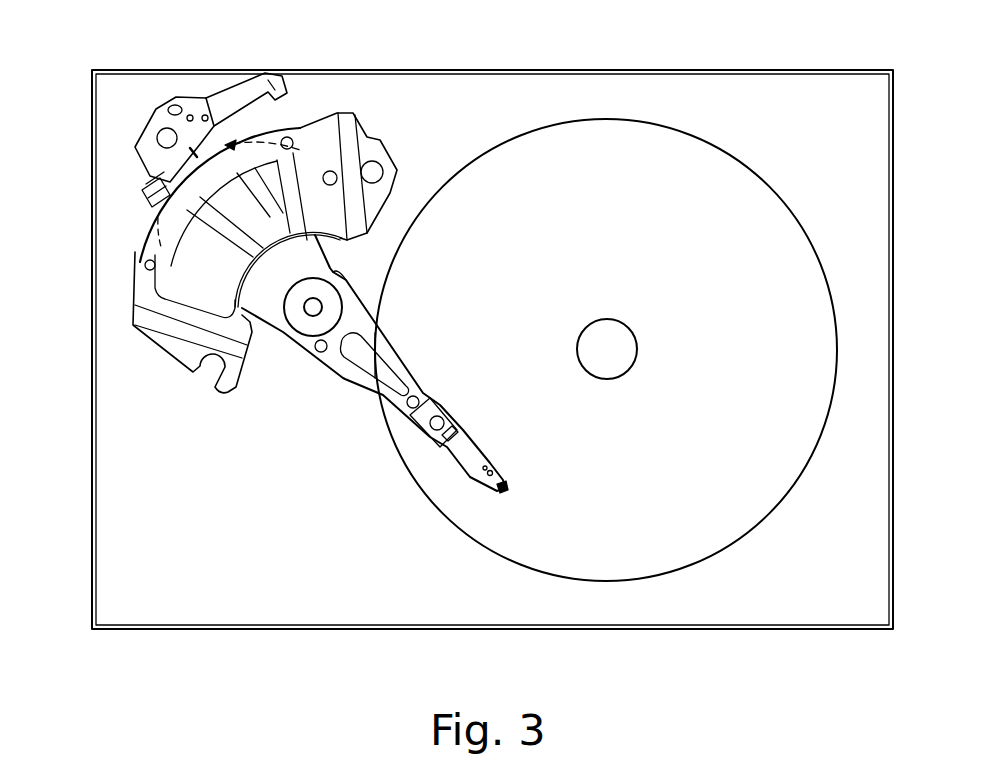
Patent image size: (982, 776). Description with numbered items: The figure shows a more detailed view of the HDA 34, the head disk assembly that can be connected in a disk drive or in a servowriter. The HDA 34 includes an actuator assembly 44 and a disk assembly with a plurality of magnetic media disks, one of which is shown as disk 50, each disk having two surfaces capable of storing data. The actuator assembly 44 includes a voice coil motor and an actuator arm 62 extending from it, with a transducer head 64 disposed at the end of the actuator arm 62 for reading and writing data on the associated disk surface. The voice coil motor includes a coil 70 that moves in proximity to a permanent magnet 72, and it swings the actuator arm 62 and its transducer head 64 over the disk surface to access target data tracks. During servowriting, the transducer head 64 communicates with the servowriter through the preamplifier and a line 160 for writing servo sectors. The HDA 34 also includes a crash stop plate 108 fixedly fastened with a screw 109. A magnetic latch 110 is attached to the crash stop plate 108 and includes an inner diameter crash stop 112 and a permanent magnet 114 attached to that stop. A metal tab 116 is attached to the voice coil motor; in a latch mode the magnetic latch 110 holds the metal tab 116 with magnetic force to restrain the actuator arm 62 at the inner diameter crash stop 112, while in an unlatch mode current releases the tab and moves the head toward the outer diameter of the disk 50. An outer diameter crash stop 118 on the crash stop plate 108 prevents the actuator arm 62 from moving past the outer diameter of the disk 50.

The HDA 34 is at (538, 68).
The magnetic media disk 50 is at (695, 566).
The actuator assembly 44 is at (293, 350).
The actuator arm 62 is at (362, 288).
The transducer head 64 is at (506, 485).
The coil 70 is at (185, 270).
The permanent magnet 72 is at (312, 127).
The line 160 is at (138, 241).
The crash stop plate 108 is at (158, 108).
The screw 109 is at (163, 137).
The magnetic latch 110 is at (140, 187).
The inner diameter crash stop 112 is at (150, 203).
The permanent magnet 114 is at (133, 184).
The metal tab 116 is at (193, 148).
The outer diameter crash stop 118 is at (273, 92).